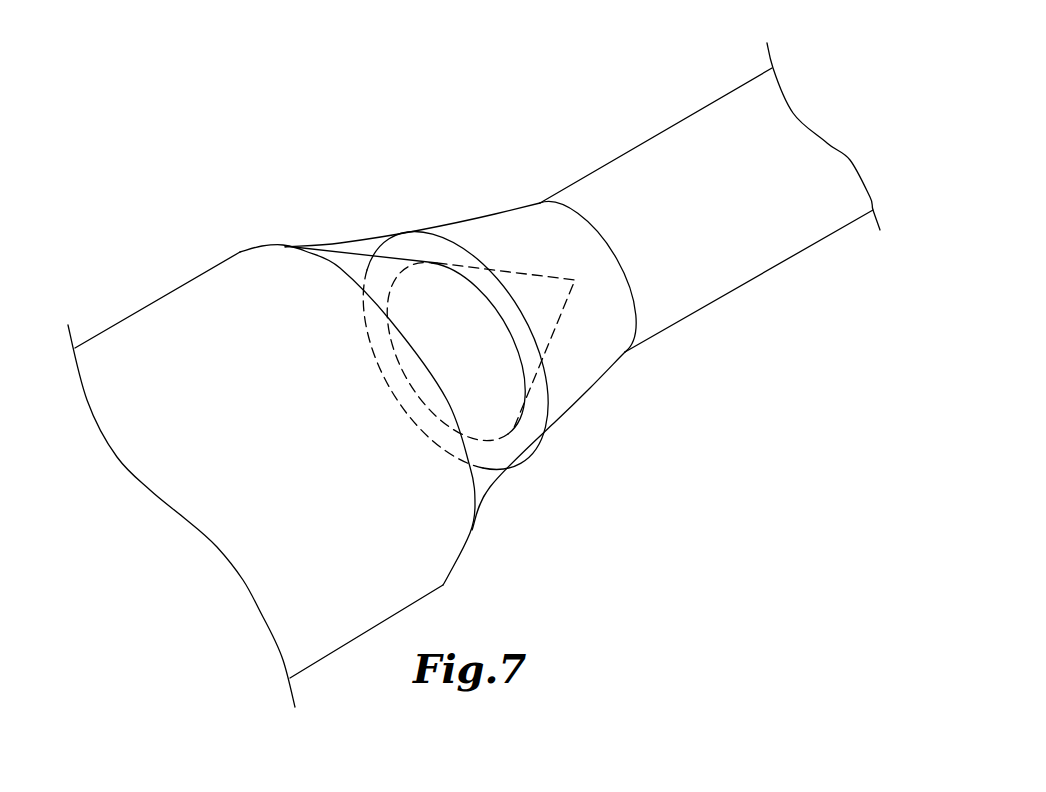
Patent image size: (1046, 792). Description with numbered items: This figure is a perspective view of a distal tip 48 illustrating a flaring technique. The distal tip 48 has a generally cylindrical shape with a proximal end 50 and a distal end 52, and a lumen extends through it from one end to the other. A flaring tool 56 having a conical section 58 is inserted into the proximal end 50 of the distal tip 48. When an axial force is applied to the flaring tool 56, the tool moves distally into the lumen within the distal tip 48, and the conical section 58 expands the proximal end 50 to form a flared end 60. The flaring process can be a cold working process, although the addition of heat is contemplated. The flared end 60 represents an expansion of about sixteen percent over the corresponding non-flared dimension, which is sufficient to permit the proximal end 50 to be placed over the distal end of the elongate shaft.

The distal tip 48 is at (685, 92).
The proximal end 50 is at (562, 475).
The distal end 52 is at (892, 217).
The flaring tool 56 is at (183, 313).
The conical section 58 is at (545, 307).
The flared end 60 is at (525, 190).